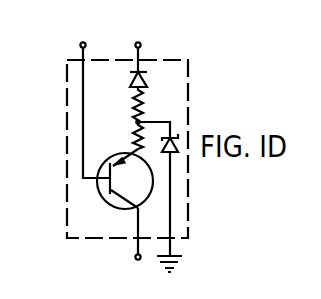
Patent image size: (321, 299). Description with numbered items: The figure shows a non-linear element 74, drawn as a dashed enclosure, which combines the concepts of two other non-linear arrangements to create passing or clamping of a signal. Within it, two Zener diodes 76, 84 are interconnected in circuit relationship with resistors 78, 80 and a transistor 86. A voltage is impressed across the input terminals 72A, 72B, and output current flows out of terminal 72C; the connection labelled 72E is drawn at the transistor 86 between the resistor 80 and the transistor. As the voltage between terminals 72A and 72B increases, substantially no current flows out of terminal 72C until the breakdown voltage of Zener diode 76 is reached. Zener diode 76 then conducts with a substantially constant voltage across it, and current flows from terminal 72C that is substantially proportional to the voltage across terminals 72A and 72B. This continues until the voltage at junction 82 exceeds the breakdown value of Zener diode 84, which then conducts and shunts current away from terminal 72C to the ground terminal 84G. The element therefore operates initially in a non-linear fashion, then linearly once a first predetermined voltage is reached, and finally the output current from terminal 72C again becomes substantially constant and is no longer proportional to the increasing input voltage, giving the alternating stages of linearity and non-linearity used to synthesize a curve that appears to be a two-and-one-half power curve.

The non-linear element 74 is at (222, 85).
The terminal 72A is at (141, 45).
The terminal 72B is at (80, 45).
The terminal 72C is at (135, 257).
The emitter connection 72E is at (138, 150).
The Zener diode 76 is at (146, 73).
The resistor 78 is at (135, 101).
The resistor 80 is at (135, 123).
The junction 82 is at (144, 120).
The Zener diode 84 is at (179, 135).
The ground terminal 84G is at (180, 256).
The transistor 86 is at (118, 206).